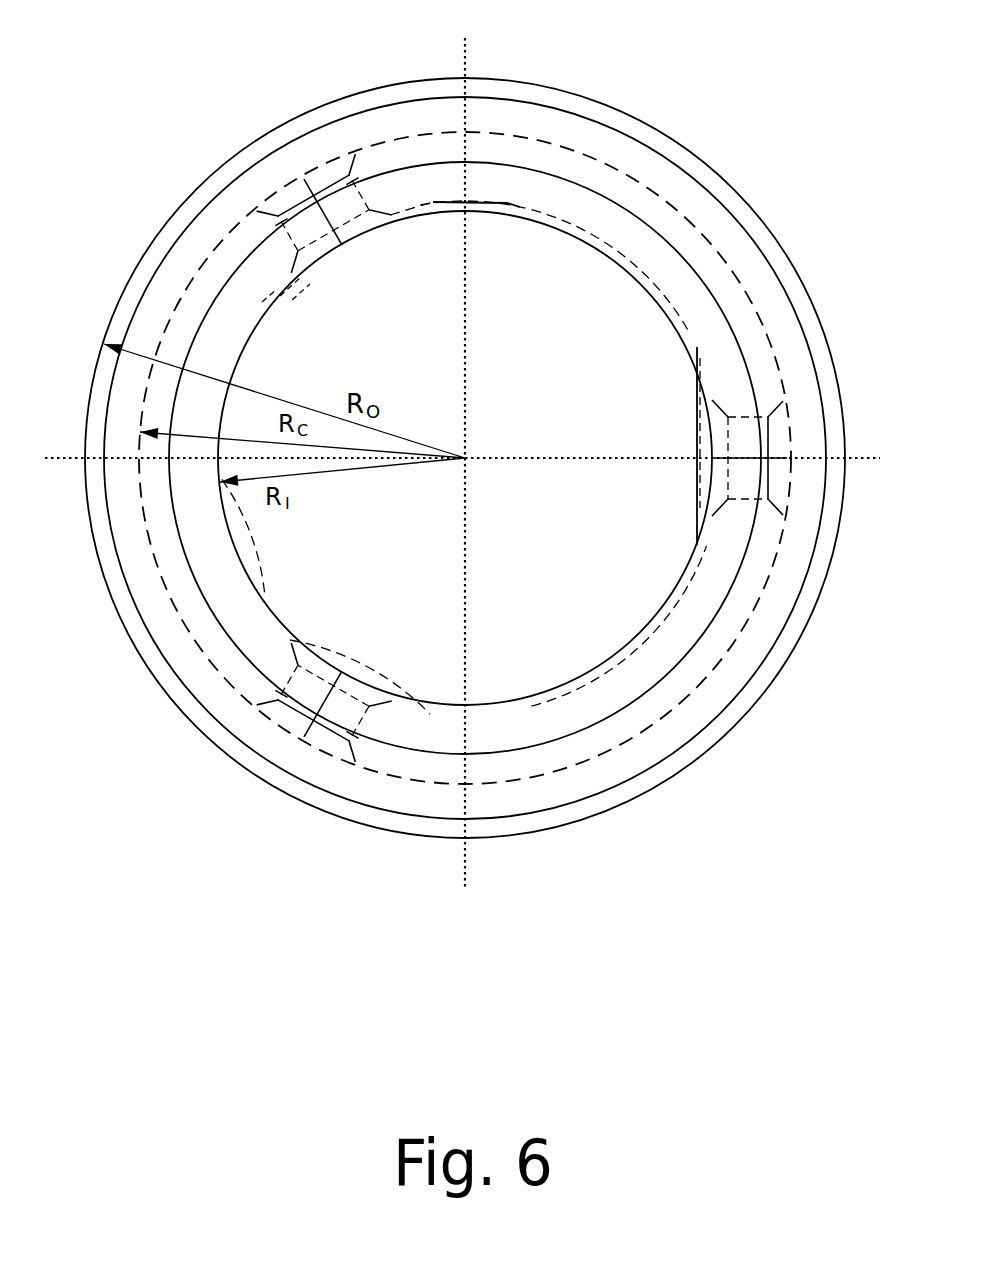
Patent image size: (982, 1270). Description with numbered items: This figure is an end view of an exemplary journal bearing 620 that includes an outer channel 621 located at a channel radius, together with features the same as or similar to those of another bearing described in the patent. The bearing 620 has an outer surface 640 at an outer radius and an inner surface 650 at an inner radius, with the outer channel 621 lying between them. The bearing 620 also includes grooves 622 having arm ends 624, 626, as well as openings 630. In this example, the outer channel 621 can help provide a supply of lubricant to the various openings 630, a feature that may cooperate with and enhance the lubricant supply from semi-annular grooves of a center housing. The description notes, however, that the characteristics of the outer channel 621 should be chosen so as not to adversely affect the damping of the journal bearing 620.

The bearing 620 is at (166, 58).
The outer channel 621 is at (230, 233).
The grooves 622 is at (272, 283).
The arm end 624 is at (240, 343).
The arm end 626 is at (508, 205).
The openings 630 is at (302, 175).
The outer surface 640 is at (125, 291).
The inner surface 650 is at (283, 290).